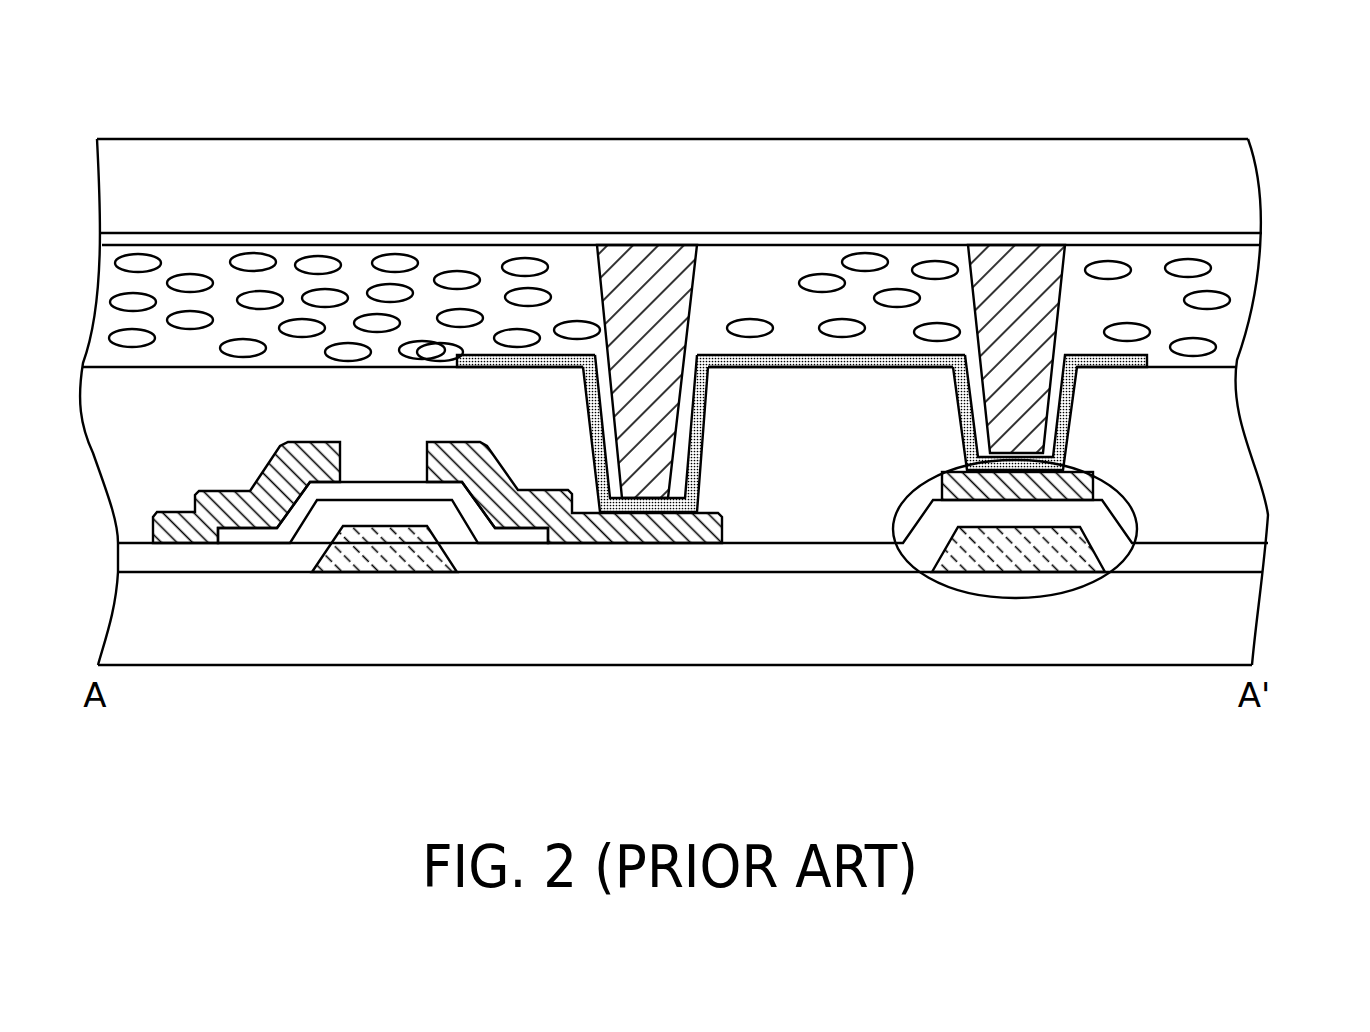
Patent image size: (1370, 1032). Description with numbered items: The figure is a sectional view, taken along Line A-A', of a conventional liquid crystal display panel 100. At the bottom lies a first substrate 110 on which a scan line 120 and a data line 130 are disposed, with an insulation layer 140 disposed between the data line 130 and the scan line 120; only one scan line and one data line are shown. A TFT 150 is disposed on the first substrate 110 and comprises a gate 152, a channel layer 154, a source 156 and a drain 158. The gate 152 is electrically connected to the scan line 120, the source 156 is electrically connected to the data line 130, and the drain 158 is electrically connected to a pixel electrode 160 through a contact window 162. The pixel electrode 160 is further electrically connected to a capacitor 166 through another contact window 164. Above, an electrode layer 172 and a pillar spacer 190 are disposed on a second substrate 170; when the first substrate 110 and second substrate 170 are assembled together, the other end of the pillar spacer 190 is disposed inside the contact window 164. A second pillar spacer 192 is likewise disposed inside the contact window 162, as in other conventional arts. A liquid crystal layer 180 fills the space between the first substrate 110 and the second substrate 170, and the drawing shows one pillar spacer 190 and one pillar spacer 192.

The liquid crystal display panel 100 is at (1215, 804).
The first substrate 110 is at (1238, 633).
The scan line 120 is at (975, 547).
The data line 130 is at (1020, 483).
The insulation layer 140 is at (1252, 560).
The TFT 150 is at (437, 630).
The gate 152 is at (382, 548).
The channel layer 154 is at (275, 540).
The source 156 is at (200, 540).
The drain 158 is at (508, 498).
The pixel electrode 160 is at (817, 367).
The contact window 162 is at (690, 382).
The contact window 164 is at (1057, 366).
The capacitor 166 is at (1013, 602).
The second substrate 170 is at (1232, 192).
The electrode layer 172 is at (1237, 242).
The liquid crystal layer 180 is at (1218, 320).
The pillar spacer 190 is at (1010, 268).
The pillar spacer 192 is at (650, 305).